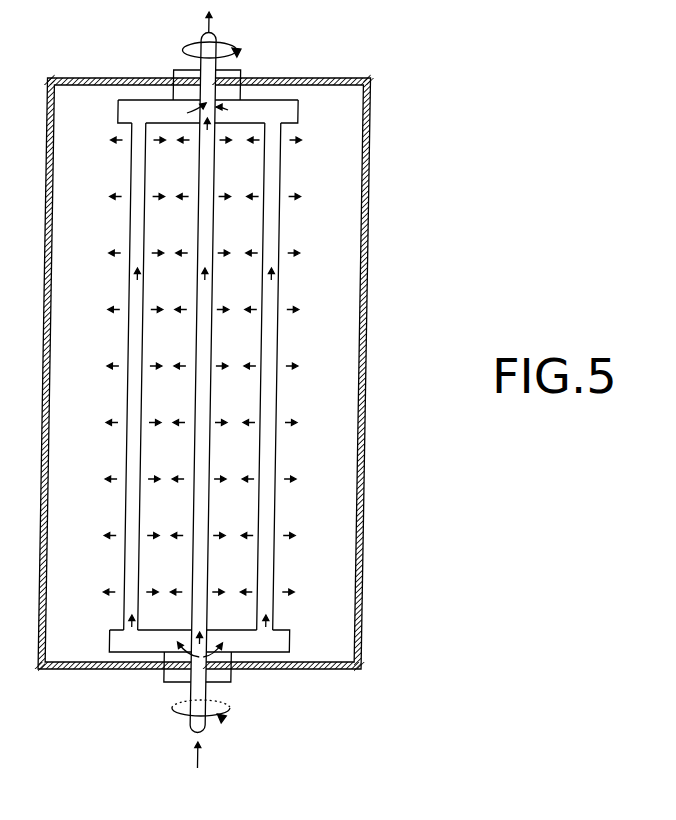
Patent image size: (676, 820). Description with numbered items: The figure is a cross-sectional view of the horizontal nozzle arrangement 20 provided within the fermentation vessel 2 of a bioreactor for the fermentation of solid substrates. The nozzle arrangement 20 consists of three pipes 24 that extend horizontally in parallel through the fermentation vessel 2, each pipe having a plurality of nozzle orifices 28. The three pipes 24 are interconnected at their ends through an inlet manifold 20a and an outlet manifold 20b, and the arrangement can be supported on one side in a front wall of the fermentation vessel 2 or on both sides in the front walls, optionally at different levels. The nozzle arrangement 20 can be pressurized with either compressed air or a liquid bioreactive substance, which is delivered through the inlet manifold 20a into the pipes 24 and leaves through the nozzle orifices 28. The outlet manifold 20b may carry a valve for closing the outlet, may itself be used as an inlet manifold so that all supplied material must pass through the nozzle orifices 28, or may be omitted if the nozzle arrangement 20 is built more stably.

The fermentation vessel 2 is at (367, 406).
The nozzle arrangement 20 is at (264, 390).
The inlet manifold 20a is at (272, 647).
The outlet manifold 20b is at (278, 113).
The pipes 24 is at (273, 171).
The nozzle orifices 28 is at (216, 136).